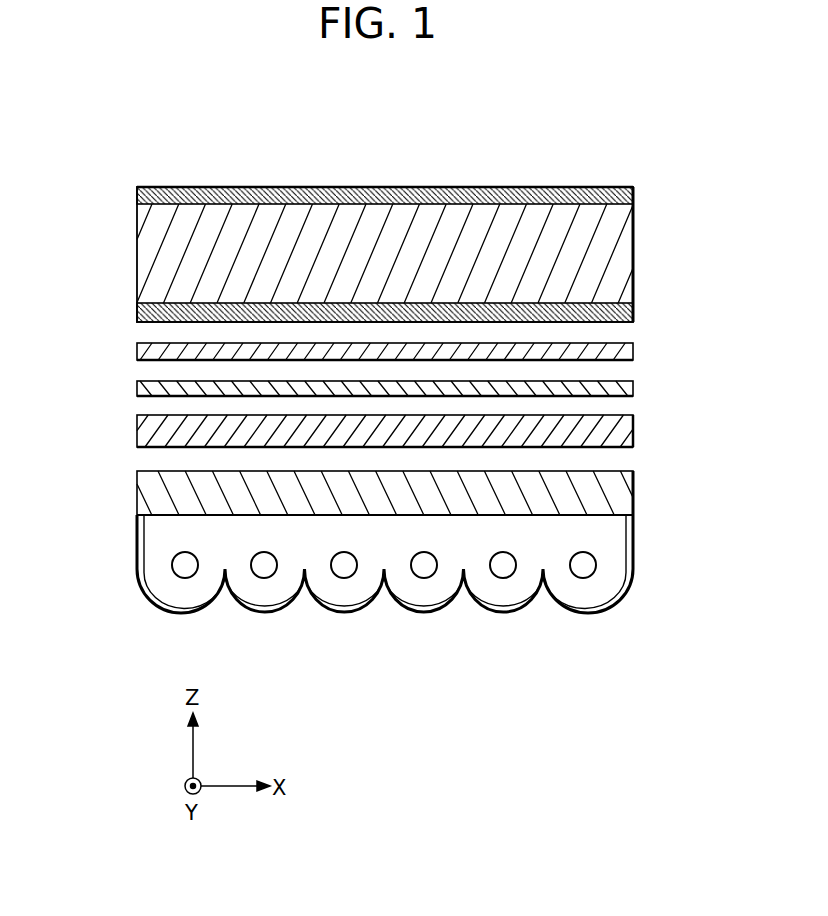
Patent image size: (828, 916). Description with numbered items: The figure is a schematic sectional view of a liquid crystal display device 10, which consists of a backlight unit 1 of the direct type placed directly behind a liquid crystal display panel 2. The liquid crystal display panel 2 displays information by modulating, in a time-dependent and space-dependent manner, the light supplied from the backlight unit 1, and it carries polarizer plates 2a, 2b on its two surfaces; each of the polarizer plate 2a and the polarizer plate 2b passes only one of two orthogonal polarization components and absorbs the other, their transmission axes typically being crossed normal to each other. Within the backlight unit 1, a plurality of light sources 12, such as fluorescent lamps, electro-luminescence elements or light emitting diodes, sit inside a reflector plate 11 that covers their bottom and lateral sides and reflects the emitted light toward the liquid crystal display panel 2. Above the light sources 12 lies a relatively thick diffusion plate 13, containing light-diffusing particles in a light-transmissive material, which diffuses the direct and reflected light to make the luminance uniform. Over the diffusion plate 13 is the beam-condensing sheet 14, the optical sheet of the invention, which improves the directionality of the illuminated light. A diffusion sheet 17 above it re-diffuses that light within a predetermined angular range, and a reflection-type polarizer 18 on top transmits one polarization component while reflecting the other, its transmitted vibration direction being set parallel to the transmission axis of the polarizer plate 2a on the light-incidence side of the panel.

The liquid crystal display device 10 is at (193, 133).
The liquid crystal display panel 2 is at (622, 228).
The polarizer plate 2a is at (137, 309).
The polarizer plate 2b is at (137, 192).
The backlight unit 1 is at (118, 343).
The reflection-type polarizer 18 is at (620, 346).
The diffusion sheet 17 is at (620, 388).
The beam-condensing sheet 14 is at (620, 428).
The diffusion plate 13 is at (620, 490).
The reflector plate 11 is at (603, 610).
The light source 12 is at (502, 570).